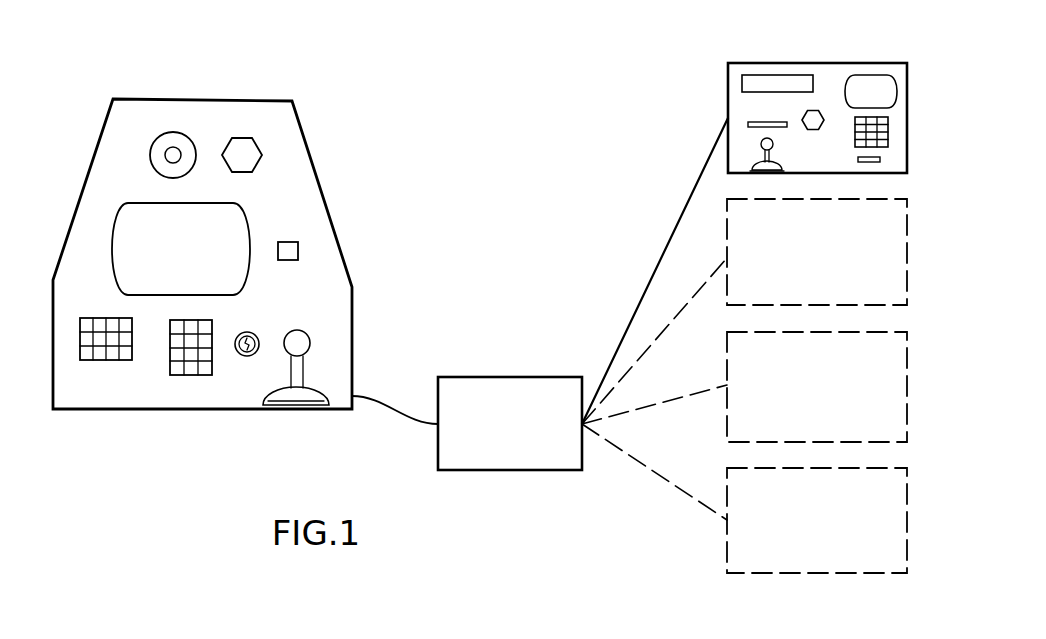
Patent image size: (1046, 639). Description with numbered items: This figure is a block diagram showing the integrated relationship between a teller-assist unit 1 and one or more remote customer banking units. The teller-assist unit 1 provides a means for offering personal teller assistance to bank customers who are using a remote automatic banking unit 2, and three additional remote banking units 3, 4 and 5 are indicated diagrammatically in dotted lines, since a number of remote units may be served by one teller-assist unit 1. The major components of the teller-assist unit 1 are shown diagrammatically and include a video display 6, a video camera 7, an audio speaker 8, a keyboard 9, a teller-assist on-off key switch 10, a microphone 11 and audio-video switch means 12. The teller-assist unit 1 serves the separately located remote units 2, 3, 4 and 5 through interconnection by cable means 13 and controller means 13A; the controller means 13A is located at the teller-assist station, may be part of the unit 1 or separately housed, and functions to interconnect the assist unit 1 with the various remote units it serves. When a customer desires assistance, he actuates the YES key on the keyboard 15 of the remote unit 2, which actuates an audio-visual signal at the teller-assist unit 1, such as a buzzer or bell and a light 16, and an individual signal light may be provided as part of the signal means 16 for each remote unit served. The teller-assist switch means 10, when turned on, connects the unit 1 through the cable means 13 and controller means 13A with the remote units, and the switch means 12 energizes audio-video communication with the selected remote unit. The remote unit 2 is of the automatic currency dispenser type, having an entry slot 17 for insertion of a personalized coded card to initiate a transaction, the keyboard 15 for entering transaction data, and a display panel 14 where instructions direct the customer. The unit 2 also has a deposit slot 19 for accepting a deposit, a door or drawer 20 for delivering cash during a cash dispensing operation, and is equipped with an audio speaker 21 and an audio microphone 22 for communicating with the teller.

The teller-assist unit 1 is at (309, 136).
The remote automatic banking unit 2 is at (722, 81).
The remote banking unit 3 is at (907, 258).
The remote banking unit 4 is at (907, 380).
The remote banking unit 5 is at (907, 530).
The video display 6 is at (131, 223).
The video camera 7 is at (151, 150).
The audio speaker 8 is at (243, 139).
The keyboard 9 is at (190, 373).
The teller-assist on-off key switch 10 is at (245, 357).
The microphone 11 is at (309, 337).
The audio-video switch means 12 is at (97, 360).
The cable means 13 is at (393, 410).
The controller means 13A is at (535, 445).
The display panel 14 is at (871, 82).
The keyboard 15 is at (878, 128).
The light 16 is at (297, 248).
The entry slot 17 is at (872, 163).
The deposit slot 19 is at (762, 121).
The door or drawer 20 is at (786, 82).
The audio speaker 21 is at (815, 114).
The audio microphone 22 is at (755, 155).